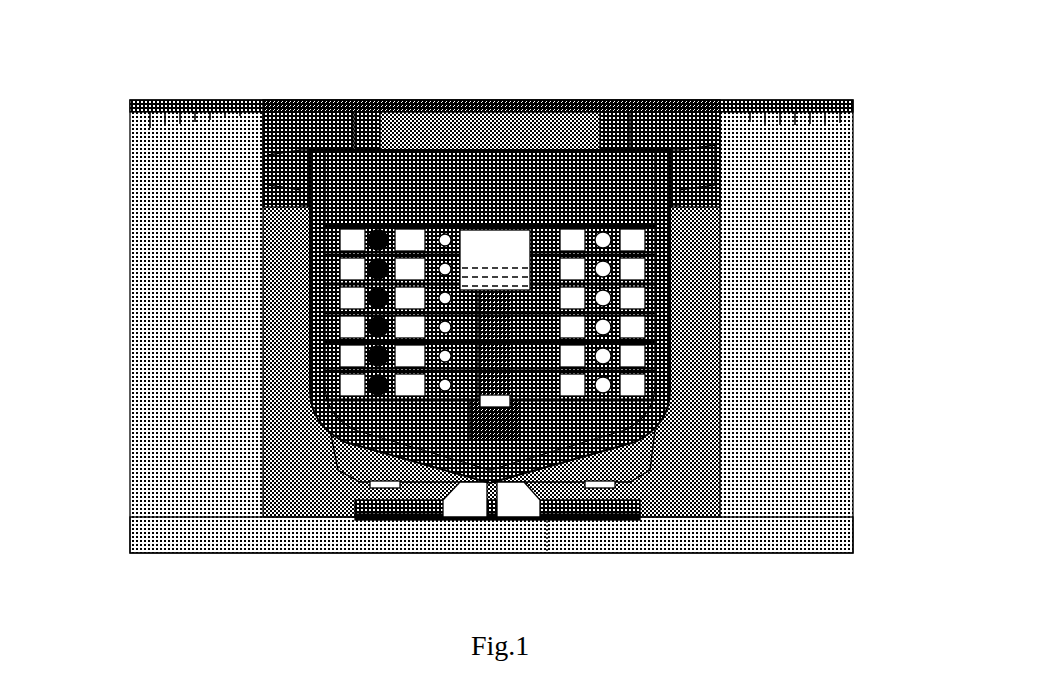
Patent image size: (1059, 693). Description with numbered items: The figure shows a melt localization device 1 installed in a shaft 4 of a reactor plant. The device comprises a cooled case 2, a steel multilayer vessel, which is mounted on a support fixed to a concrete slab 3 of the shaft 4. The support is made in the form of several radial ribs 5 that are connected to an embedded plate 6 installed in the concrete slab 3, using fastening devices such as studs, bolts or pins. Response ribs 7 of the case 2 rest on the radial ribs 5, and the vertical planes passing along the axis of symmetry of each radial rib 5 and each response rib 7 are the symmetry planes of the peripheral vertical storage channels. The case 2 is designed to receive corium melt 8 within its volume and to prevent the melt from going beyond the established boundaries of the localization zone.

The melt localization device 1 is at (494, 286).
The cooled case 2 is at (356, 319).
The concrete slab 3 is at (448, 544).
The shaft 4 is at (448, 276).
The radial ribs 5 is at (651, 480).
The embedded plate 6 is at (651, 543).
The response ribs 7 is at (634, 408).
The corium melt 8 is at (343, 270).